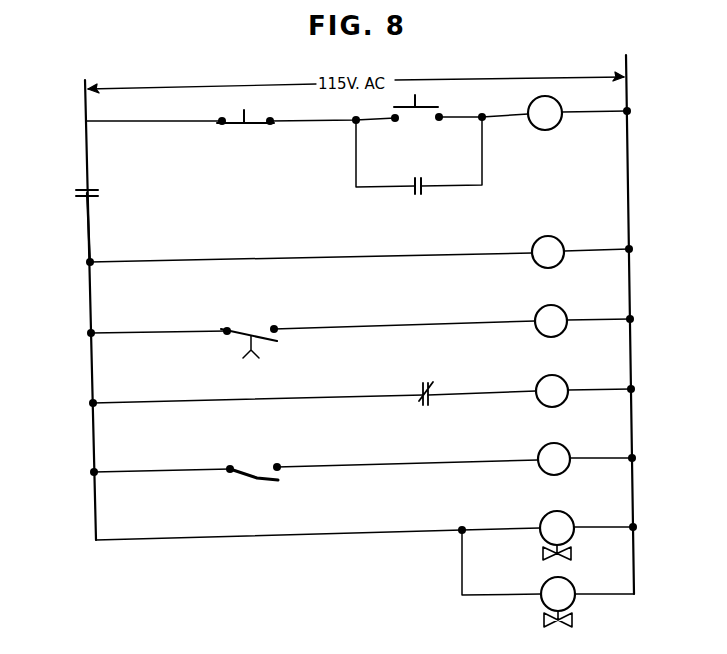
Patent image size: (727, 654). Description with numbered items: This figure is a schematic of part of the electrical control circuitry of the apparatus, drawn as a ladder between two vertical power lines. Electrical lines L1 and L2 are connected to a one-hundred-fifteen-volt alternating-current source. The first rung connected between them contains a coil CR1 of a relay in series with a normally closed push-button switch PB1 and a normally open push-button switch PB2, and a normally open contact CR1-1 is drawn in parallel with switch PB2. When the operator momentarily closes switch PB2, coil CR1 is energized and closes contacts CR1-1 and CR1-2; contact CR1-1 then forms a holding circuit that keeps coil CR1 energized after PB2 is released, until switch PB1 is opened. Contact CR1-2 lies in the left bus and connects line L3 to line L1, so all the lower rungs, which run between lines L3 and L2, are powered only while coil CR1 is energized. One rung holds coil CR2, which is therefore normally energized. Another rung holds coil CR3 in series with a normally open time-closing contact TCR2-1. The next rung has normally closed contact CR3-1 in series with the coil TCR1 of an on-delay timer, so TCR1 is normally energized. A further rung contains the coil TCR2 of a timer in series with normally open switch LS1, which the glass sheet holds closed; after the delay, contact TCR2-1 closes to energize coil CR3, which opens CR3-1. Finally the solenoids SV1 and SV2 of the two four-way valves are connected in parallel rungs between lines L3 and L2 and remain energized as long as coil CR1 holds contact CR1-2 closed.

The electrical line L1 is at (85, 161).
The electrical line L2 is at (630, 164).
The line L3 is at (85, 239).
The normally closed push-button switch PB1 is at (258, 124).
The normally open push-button switch PB2 is at (437, 108).
The relay coil CR1 is at (553, 126).
The normally open contact CR1-1 is at (424, 193).
The normally open contact CR1-2 is at (91, 189).
The relay coil CR2 is at (558, 236).
The relay coil CR3 is at (557, 310).
The normally closed contact CR3-1 is at (427, 401).
The on-delay timer coil TCR1 is at (553, 375).
The timer coil TCR2 is at (562, 443).
The normally open time-closing contact TCR2-1 is at (255, 327).
The normally open switch LS1 is at (257, 474).
The solenoid SV1 is at (560, 511).
The solenoid SV2 is at (569, 582).